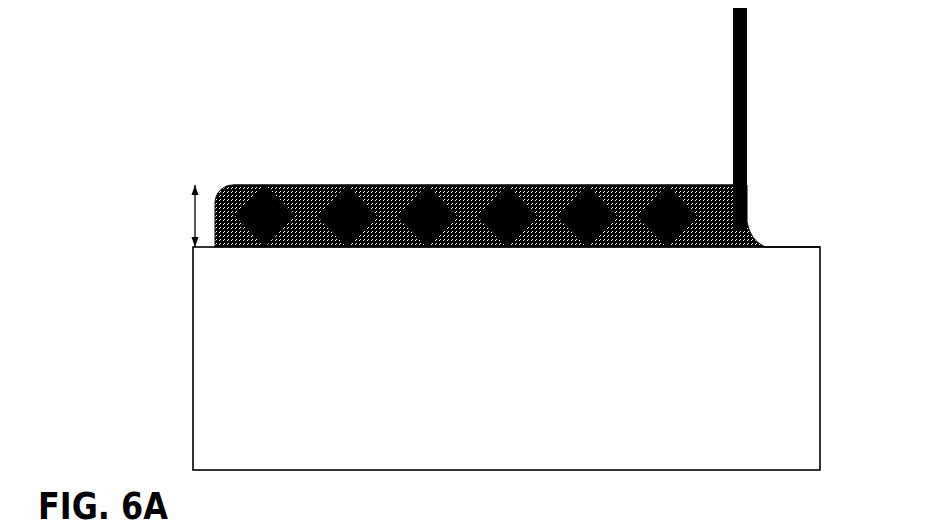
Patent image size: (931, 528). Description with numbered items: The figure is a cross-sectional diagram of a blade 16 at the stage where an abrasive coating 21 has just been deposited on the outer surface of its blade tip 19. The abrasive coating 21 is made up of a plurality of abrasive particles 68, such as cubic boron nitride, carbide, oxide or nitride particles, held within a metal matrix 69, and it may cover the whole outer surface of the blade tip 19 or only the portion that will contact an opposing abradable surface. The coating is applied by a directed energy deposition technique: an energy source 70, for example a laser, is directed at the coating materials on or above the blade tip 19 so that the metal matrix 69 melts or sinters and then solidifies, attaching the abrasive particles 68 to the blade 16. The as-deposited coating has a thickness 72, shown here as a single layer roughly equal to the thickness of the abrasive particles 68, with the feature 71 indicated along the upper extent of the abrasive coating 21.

The blade 16 is at (520, 370).
The blade tip 19 is at (812, 247).
The abrasive coating 21 is at (468, 127).
The abrasive particles 68 is at (282, 202).
The metal matrix 69 is at (460, 183).
The energy source 70 is at (738, 88).
The layer upper surface 71 is at (600, 185).
The thickness 72 is at (177, 216).